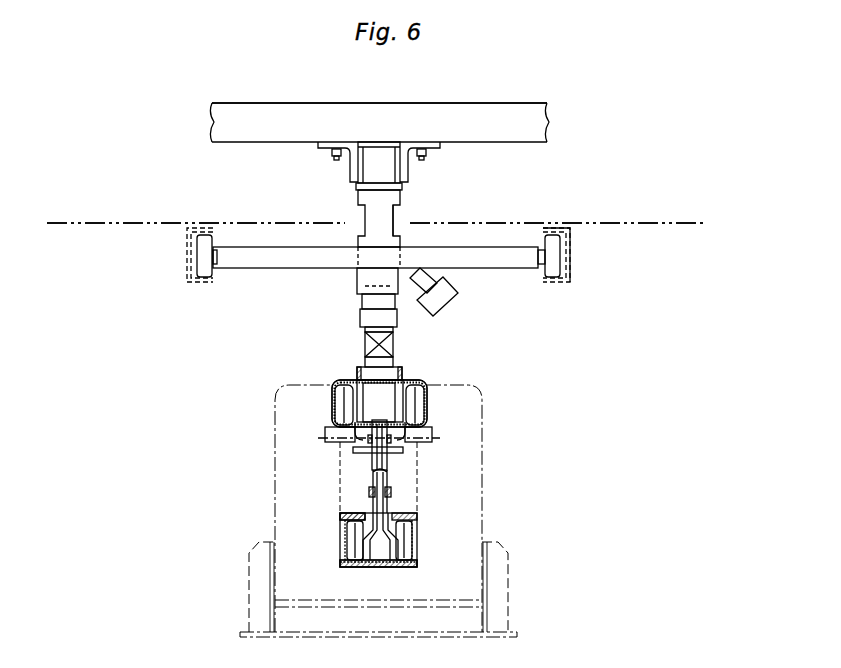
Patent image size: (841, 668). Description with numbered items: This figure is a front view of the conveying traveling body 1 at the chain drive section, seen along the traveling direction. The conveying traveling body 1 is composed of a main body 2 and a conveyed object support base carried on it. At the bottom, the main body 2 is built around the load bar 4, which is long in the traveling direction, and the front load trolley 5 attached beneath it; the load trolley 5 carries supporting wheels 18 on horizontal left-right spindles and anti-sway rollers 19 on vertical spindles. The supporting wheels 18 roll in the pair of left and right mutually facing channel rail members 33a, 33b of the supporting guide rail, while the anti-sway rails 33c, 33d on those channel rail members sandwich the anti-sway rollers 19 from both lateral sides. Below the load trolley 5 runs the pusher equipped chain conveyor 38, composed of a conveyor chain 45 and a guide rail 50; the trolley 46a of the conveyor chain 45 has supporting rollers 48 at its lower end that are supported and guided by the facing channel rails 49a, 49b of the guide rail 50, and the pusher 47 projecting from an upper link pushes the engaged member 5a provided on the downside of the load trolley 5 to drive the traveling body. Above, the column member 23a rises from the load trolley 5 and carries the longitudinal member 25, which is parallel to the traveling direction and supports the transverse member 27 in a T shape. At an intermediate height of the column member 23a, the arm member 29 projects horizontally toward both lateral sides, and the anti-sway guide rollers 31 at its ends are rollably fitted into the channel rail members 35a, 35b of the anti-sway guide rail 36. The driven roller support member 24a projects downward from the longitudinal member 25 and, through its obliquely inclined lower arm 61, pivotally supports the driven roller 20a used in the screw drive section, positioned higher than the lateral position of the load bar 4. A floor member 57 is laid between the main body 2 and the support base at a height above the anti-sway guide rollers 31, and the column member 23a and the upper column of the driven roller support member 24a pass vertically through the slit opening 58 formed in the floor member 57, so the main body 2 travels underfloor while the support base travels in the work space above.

The conveying traveling body 1 is at (232, 96).
The main body 2 is at (348, 311).
The load bar 4 is at (362, 343).
The load trolley 5 is at (408, 432).
The engaged member 5a is at (375, 468).
The supporting wheels 18 is at (344, 400).
The anti-sway rollers 19 is at (382, 354).
The driven roller 20a is at (445, 297).
The column member 23a is at (375, 212).
The driven roller support member 24a is at (429, 266).
The longitudinal member 25 is at (372, 158).
The transverse member 27 is at (532, 122).
The arm member 29 is at (262, 258).
The anti-sway guide rollers 31 is at (210, 250).
The channel rail member 33a is at (336, 412).
The channel rail member 33b is at (427, 410).
The anti-sway rail 33c is at (360, 369).
The anti-sway rail 33d is at (402, 369).
The channel rail member 35a is at (186, 264).
The channel rail member 35b is at (572, 254).
The anti-sway guide rail 36 is at (560, 221).
The pusher equipped chain conveyor 38 is at (396, 500).
The conveyor chain 45 is at (368, 491).
The trolley 46a is at (373, 500).
The pusher 47 is at (388, 465).
The supporting rollers 48 is at (348, 546).
The channel rail 49a is at (340, 528).
The channel rail 49b is at (410, 567).
The guide rail 50 is at (421, 520).
The floor member 57 is at (98, 222).
The slit opening 58 is at (404, 224).
The lower arm 61 is at (413, 276).